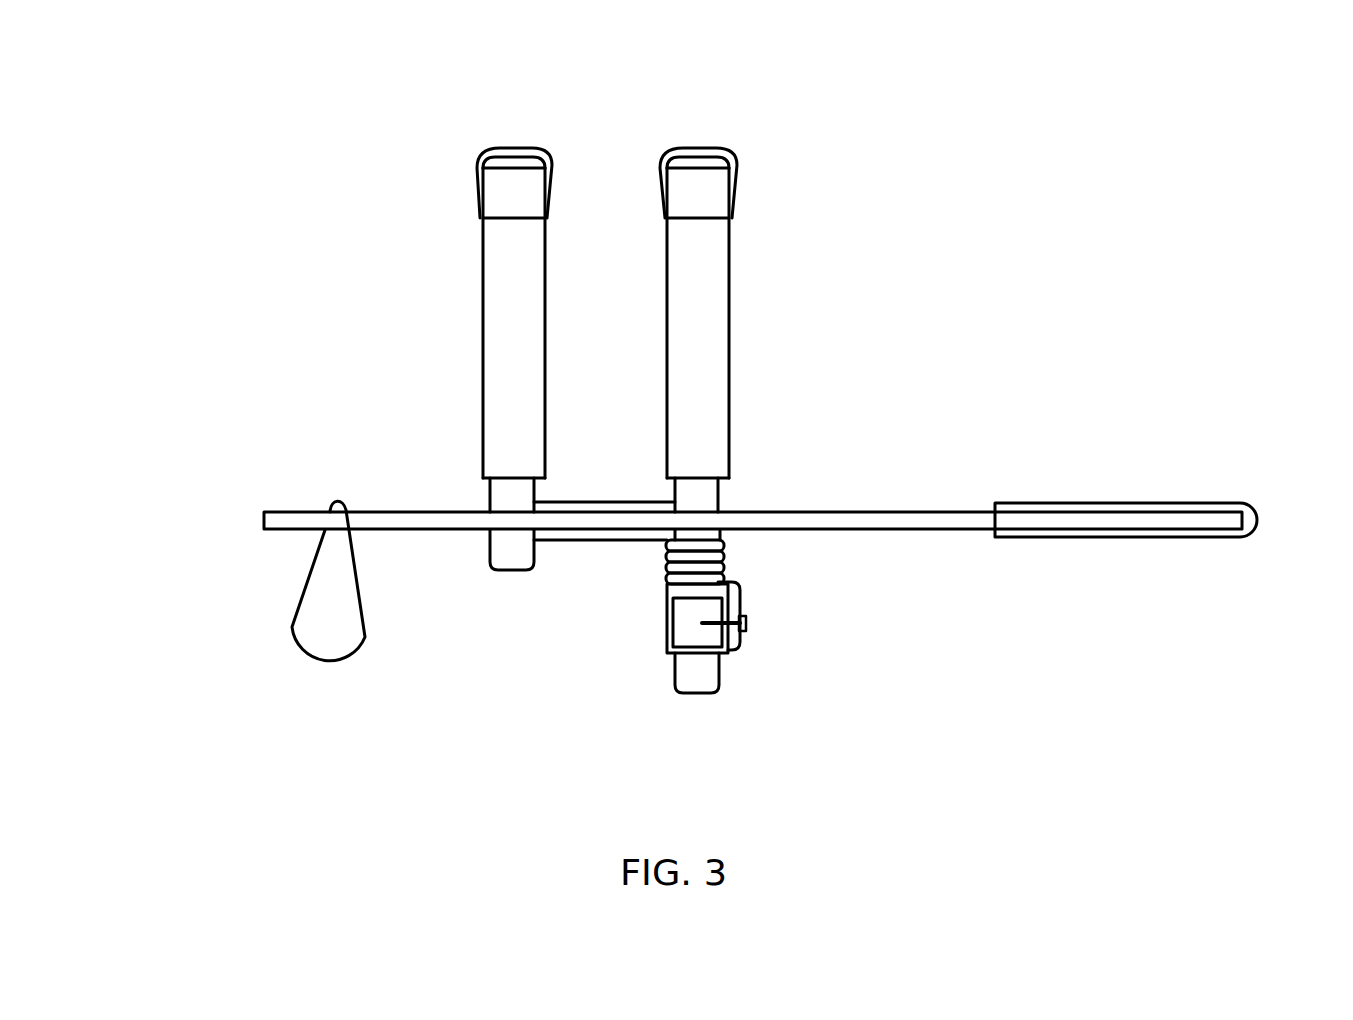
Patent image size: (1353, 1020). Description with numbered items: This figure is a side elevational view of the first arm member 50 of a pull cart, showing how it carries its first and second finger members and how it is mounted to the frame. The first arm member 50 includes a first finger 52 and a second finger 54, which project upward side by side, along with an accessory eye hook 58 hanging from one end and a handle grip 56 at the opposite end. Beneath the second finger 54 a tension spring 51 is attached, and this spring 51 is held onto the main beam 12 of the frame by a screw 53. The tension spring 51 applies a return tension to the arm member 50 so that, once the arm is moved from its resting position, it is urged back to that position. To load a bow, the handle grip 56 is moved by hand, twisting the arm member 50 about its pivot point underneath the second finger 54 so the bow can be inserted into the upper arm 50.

The main beam 12 is at (665, 635).
The first arm member 50 is at (881, 470).
The tension spring 51 is at (723, 555).
The first finger 52 is at (477, 167).
The screw 53 is at (748, 625).
The second finger 54 is at (732, 160).
The handle grip 56 is at (1210, 503).
The accessory eye hook 58 is at (288, 624).